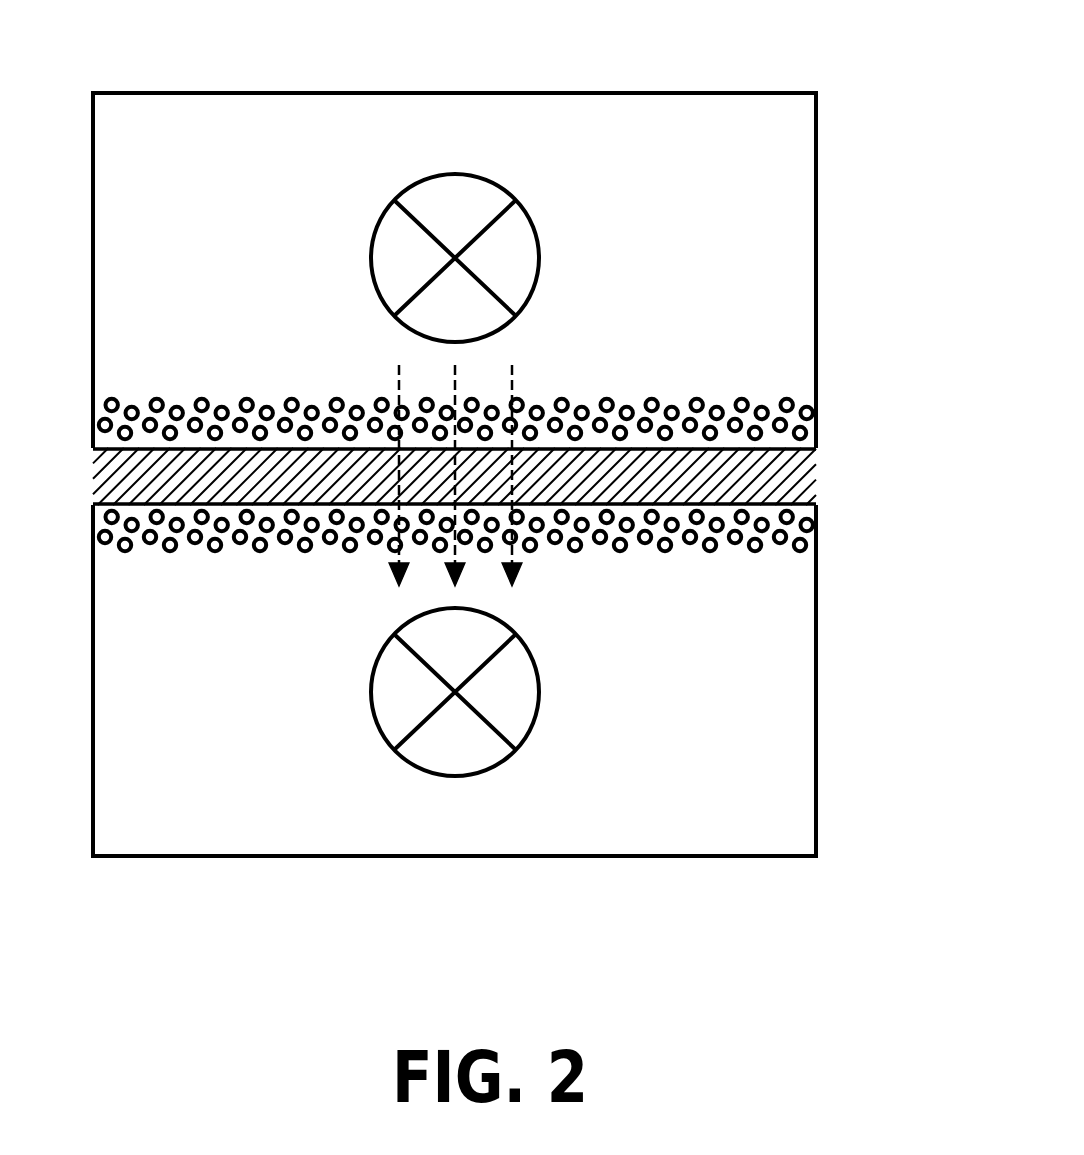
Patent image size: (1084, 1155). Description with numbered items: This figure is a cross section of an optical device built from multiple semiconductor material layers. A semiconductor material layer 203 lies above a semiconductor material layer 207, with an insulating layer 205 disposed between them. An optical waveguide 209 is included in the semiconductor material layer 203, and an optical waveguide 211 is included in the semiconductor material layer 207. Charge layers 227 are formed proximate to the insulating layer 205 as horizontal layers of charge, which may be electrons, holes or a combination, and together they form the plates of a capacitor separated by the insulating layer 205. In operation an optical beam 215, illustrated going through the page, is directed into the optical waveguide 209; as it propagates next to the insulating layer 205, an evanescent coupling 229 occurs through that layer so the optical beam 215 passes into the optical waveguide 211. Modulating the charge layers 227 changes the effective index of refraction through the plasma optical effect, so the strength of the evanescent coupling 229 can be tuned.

The semiconductor material layer 203 is at (808, 214).
The insulating layer 205 is at (817, 470).
The semiconductor material layer 207 is at (810, 692).
The optical waveguide 209 is at (755, 103).
The optical waveguide 211 is at (707, 843).
The optical beam 215 is at (530, 211).
The charge layers 227 is at (195, 540).
The evanescent coupling 229 is at (517, 383).